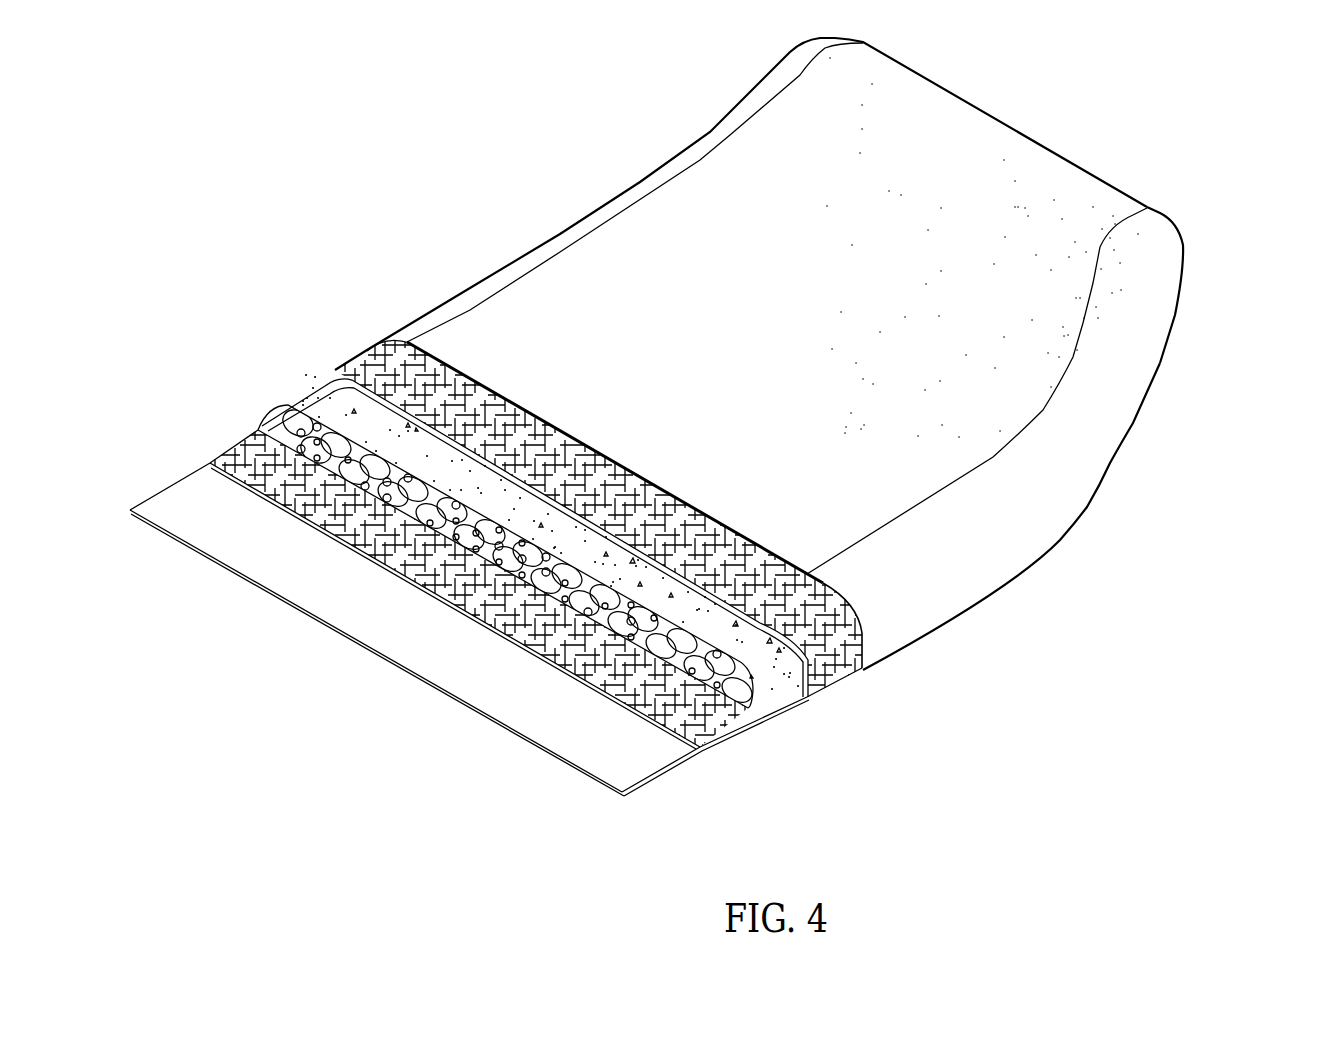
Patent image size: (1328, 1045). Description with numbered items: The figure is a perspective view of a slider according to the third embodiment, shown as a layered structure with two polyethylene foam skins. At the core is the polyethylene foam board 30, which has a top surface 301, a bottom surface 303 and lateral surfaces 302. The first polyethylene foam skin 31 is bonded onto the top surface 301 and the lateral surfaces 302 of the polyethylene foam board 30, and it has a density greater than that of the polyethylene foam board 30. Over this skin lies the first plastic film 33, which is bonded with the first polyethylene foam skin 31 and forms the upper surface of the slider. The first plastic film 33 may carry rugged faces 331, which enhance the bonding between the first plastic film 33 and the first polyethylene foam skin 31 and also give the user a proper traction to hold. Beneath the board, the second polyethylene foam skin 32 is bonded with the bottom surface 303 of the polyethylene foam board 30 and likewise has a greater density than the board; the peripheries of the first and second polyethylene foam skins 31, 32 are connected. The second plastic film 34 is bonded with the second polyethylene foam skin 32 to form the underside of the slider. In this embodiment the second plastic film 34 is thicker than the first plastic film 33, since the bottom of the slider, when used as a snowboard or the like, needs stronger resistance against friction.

The polyethylene foam board 30 is at (920, 738).
The top surface 301 is at (735, 642).
The lateral surfaces 302 is at (772, 693).
The bottom surface 303 is at (732, 733).
The first polyethylene foam skin 31 is at (413, 375).
The second polyethylene foam skin 32 is at (266, 463).
The first plastic film 33 is at (542, 280).
The rugged faces 331 is at (1032, 363).
The second plastic film 34 is at (207, 512).